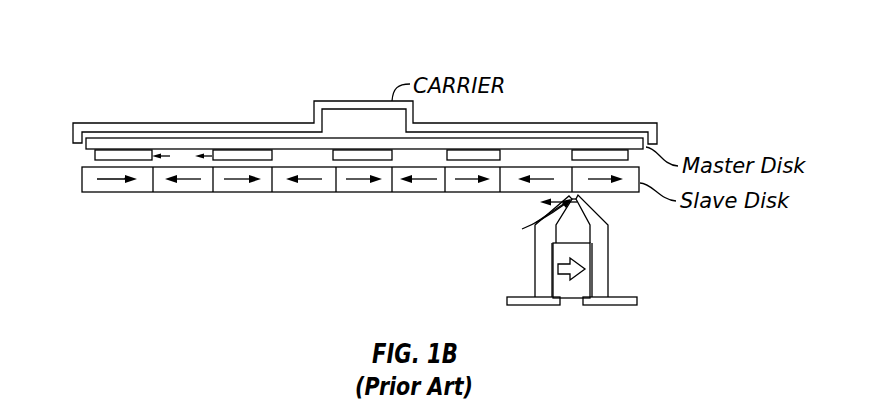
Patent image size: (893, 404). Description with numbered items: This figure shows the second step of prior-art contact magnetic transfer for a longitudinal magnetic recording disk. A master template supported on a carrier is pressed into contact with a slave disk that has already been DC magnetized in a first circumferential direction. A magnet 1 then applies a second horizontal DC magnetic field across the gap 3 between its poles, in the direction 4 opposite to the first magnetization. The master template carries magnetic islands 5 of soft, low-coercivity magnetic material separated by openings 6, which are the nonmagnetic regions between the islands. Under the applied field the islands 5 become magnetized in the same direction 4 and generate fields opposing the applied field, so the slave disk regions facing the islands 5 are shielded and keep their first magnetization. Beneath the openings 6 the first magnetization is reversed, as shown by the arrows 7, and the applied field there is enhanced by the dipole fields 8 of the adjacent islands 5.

The magnet 1 is at (598, 285).
The gap 3 is at (533, 228).
The direction 4 is at (578, 197).
The magnetic islands 5 is at (95, 153).
The openings 6 is at (190, 160).
The arrows 7 is at (182, 180).
The dipole fields 8 is at (208, 153).